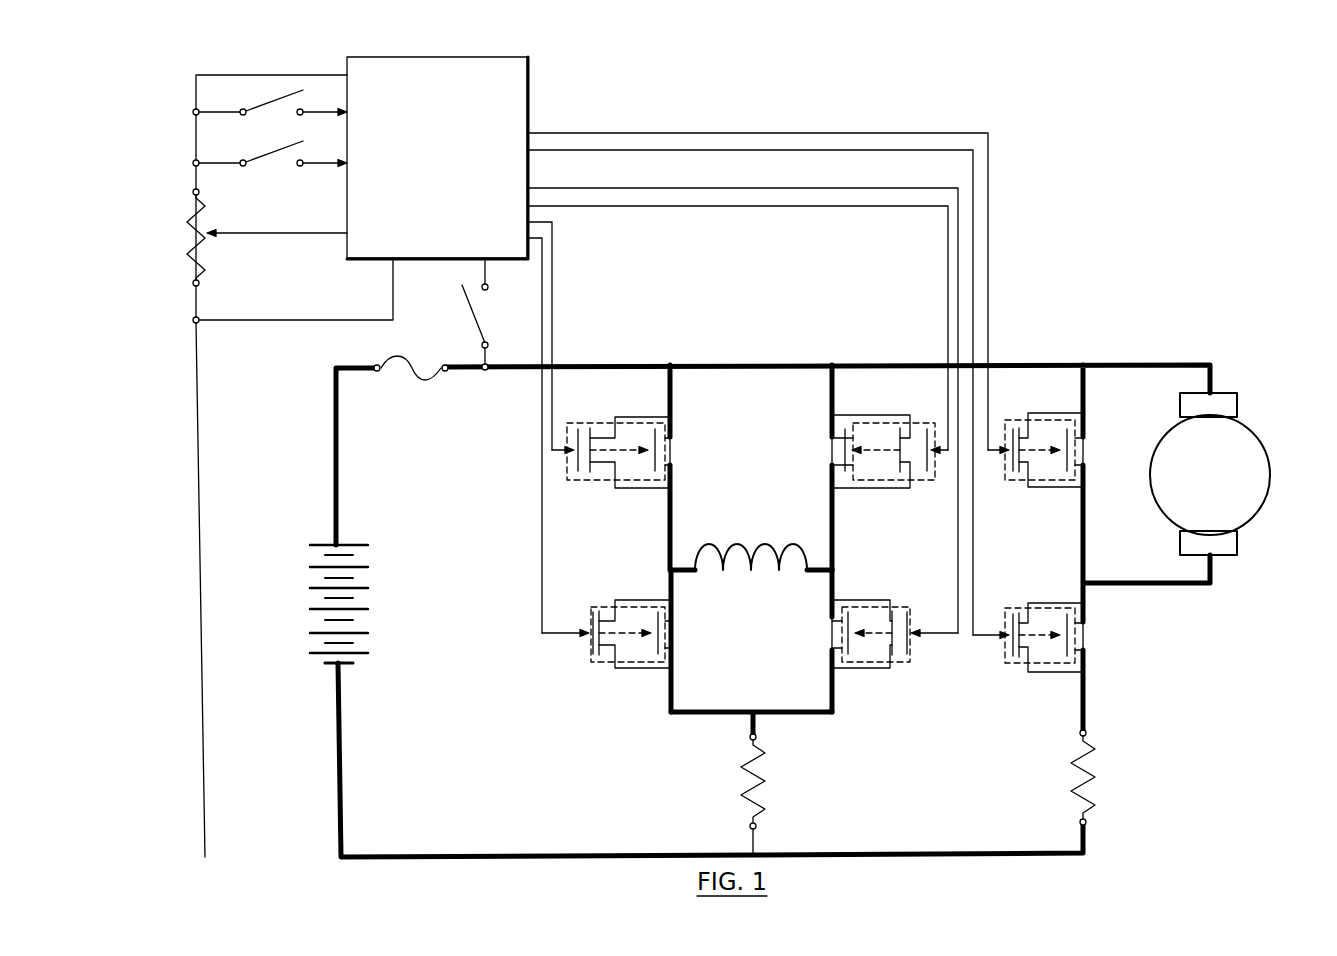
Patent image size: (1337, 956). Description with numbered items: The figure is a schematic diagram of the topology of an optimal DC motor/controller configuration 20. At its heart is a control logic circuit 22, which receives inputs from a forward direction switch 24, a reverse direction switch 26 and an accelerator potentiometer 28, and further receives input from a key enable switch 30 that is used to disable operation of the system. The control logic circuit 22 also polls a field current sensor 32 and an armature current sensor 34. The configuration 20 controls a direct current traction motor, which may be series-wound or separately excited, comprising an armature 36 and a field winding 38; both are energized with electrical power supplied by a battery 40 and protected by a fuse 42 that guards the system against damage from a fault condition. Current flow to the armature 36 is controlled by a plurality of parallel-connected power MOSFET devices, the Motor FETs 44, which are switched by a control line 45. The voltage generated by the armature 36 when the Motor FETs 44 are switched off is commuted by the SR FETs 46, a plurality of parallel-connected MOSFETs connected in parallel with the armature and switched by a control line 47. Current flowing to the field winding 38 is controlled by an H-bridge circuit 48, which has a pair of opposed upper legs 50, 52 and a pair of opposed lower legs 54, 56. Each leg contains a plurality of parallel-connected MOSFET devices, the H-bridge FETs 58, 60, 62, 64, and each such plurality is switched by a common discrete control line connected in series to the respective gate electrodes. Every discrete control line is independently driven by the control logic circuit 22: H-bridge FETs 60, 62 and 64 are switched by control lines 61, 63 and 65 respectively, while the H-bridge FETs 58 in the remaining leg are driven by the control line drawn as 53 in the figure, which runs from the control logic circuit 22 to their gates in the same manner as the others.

The motor/controller configuration 20 is at (1113, 670).
The control logic circuit 22 is at (423, 162).
The forward direction switch 24 is at (267, 107).
The reverse direction switch 26 is at (267, 157).
The accelerator potentiometer 28 is at (187, 222).
The key enable switch 30 is at (478, 310).
The field current sensor 32 is at (762, 750).
The armature current sensor 34 is at (1090, 747).
The armature 36 is at (1267, 497).
The field winding 38 is at (737, 543).
The battery 40 is at (323, 543).
The fuse 42 is at (427, 373).
The Motor FETs 44 is at (1038, 673).
The control line 45 is at (975, 588).
The SR FETs 46 is at (1042, 490).
The control line 47 is at (990, 305).
The H-bridge circuit 48 is at (848, 728).
The upper leg 50 is at (673, 392).
The upper leg 52 is at (828, 392).
The control line 53 is at (553, 393).
The lower leg 54 is at (673, 600).
The lower leg 56 is at (828, 587).
The H-bridge FETs 58 is at (595, 488).
The H-bridge FETs 60 is at (910, 490).
The control line 61 is at (948, 302).
The H-bridge FETs 62 is at (615, 667).
The control line 63 is at (544, 570).
The H-bridge FETs 64 is at (887, 668).
The control line 65 is at (957, 540).